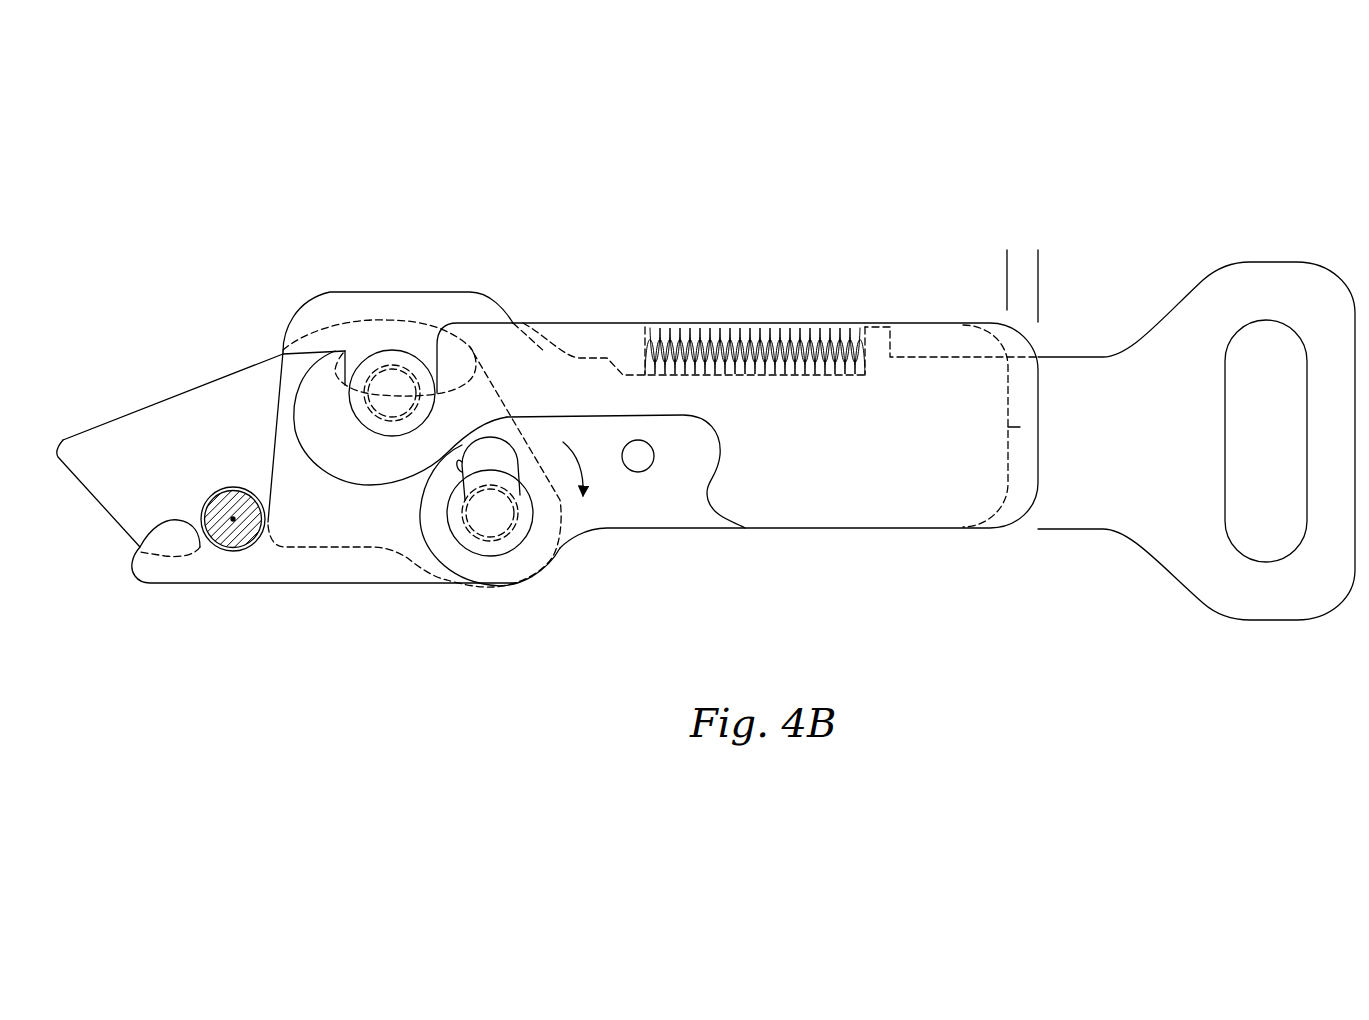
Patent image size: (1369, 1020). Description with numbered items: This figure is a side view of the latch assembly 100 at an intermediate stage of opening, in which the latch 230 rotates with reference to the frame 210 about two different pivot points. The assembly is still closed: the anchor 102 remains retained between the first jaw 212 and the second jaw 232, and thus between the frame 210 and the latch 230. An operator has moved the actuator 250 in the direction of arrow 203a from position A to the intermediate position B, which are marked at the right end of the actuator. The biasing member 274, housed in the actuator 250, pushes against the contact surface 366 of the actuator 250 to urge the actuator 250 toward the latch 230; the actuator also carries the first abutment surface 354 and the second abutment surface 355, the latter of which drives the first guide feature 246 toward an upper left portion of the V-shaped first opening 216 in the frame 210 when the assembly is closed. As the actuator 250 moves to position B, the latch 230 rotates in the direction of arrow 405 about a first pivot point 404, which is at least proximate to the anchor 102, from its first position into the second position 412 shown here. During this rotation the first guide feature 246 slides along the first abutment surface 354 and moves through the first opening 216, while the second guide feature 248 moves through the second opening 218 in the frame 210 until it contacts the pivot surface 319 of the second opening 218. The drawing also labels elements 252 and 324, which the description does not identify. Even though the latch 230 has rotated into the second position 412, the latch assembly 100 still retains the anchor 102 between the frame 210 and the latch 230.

The latch assembly 100 is at (1136, 157).
The anchor 102 is at (237, 547).
The arrow 203a is at (1036, 423).
The frame 210 is at (1088, 500).
The first jaw 212 is at (152, 583).
The first opening 216 is at (472, 323).
The second opening 218 is at (427, 540).
The latch 230 is at (213, 395).
The second jaw 232 is at (70, 455).
The first guide feature 246 is at (378, 356).
The second guide feature 248 is at (530, 518).
The actuator 250 is at (825, 500).
The cam surface 252 is at (373, 468).
The biasing member 274 is at (765, 333).
The pivot surface 319 is at (495, 537).
The spring seat 324 is at (857, 323).
The first abutment surface 354 is at (365, 338).
The second abutment surface 355 is at (388, 356).
The contact surface 366 is at (658, 323).
The first pivot point 404 is at (233, 519).
The arrow 405 is at (580, 472).
The second position 412 is at (313, 208).